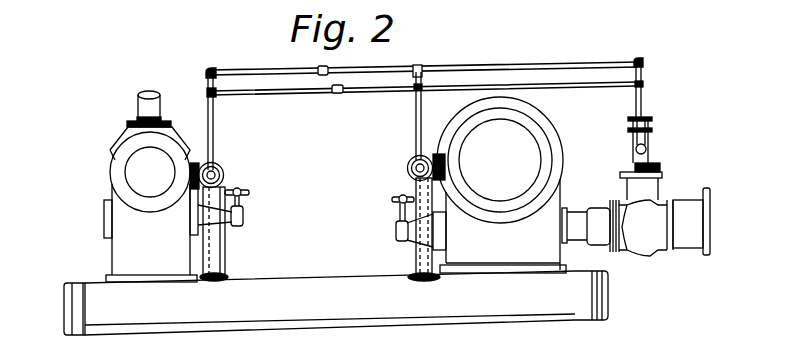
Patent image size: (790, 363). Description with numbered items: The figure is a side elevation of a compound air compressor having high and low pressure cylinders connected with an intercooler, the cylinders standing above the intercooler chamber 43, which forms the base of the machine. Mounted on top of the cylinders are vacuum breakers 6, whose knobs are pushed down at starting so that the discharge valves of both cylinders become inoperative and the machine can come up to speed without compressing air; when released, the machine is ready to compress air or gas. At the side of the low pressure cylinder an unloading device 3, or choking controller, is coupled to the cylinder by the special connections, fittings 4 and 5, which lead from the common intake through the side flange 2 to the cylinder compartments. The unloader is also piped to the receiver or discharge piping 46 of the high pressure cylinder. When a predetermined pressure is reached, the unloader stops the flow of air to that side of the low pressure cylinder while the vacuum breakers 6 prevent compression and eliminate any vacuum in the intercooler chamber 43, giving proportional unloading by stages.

The receiver or discharge piping 46 is at (143, 104).
The vacuum breaker 6 is at (224, 172).
The side flange 2 is at (564, 210).
The fitting 5 is at (603, 226).
The unloading device 3 is at (643, 186).
The fitting 4 is at (688, 221).
The intercooler chamber 43 is at (336, 303).